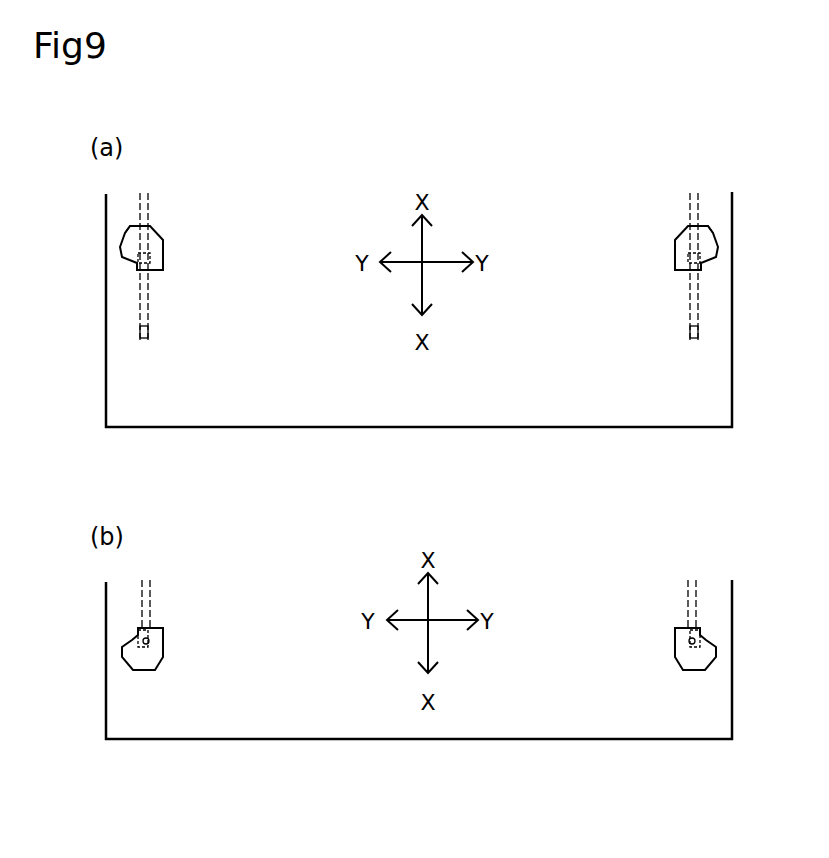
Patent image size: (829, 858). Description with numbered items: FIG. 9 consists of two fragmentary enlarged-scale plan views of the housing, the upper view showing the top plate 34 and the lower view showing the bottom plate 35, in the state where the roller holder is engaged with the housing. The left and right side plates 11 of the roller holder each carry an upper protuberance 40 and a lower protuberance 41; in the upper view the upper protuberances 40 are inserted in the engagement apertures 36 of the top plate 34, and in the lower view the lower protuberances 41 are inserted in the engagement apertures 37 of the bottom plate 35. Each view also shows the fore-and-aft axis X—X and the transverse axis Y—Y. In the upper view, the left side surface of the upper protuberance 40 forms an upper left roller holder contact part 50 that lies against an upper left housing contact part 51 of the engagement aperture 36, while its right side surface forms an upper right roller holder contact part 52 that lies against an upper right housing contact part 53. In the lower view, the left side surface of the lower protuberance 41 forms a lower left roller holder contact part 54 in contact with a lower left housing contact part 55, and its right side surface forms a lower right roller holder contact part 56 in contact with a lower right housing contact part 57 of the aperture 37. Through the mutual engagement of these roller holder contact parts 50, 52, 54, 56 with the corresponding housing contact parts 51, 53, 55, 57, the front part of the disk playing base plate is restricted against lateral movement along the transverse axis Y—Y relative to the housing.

The side plate 11 is at (150, 206).
The top plate 34 is at (422, 413).
The bottom plate 35 is at (427, 725).
The engagement aperture 36 is at (160, 241).
The engagement aperture 37 is at (160, 665).
The upper protuberance 40 is at (150, 258).
The lower protuberance 41 is at (150, 640).
The upper left roller holder contact part 50 is at (126, 228).
The upper left housing contact part 51 is at (145, 270).
The upper right roller holder contact part 52 is at (697, 262).
The upper right housing contact part 53 is at (693, 270).
The lower left roller holder contact part 54 is at (150, 338).
The lower left housing contact part 55 is at (148, 632).
The lower right roller holder contact part 56 is at (688, 338).
The lower right housing contact part 57 is at (690, 632).